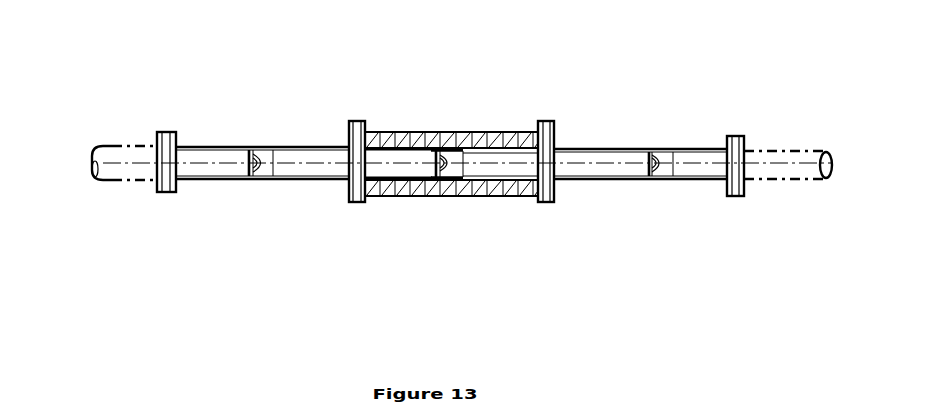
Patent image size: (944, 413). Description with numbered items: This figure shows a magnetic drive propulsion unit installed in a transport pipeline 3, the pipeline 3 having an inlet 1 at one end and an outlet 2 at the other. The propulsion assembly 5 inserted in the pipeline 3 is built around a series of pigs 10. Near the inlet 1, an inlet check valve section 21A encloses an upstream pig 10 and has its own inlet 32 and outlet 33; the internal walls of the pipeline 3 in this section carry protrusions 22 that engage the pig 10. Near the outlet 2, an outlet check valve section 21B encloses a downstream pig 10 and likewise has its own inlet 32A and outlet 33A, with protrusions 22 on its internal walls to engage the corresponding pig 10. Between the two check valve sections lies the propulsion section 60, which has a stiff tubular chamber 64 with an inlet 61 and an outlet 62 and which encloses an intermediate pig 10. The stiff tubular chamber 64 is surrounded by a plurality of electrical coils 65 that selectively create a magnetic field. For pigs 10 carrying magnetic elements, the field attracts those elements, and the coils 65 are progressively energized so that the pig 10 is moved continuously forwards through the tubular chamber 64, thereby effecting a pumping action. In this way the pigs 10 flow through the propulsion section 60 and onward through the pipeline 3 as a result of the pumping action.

The inlet 1 is at (93, 163).
The outlet 2 is at (833, 172).
The transport pipeline 3 is at (137, 180).
The propulsion assembly 5 is at (122, 104).
The pig 10 is at (260, 172).
The inlet check valve section 21A is at (285, 142).
The outlet check valve section 21B is at (692, 150).
The protrusions 22 is at (215, 147).
The inlet 32 is at (177, 160).
The inlet 32A is at (550, 163).
The outlet 33 is at (326, 129).
The outlet 33A is at (747, 155).
The propulsion section 60 is at (443, 131).
The inlet 61 is at (353, 158).
The outlet 62 is at (591, 144).
The stiff tubular chamber 64 is at (497, 178).
The electrical coils 65 is at (487, 137).